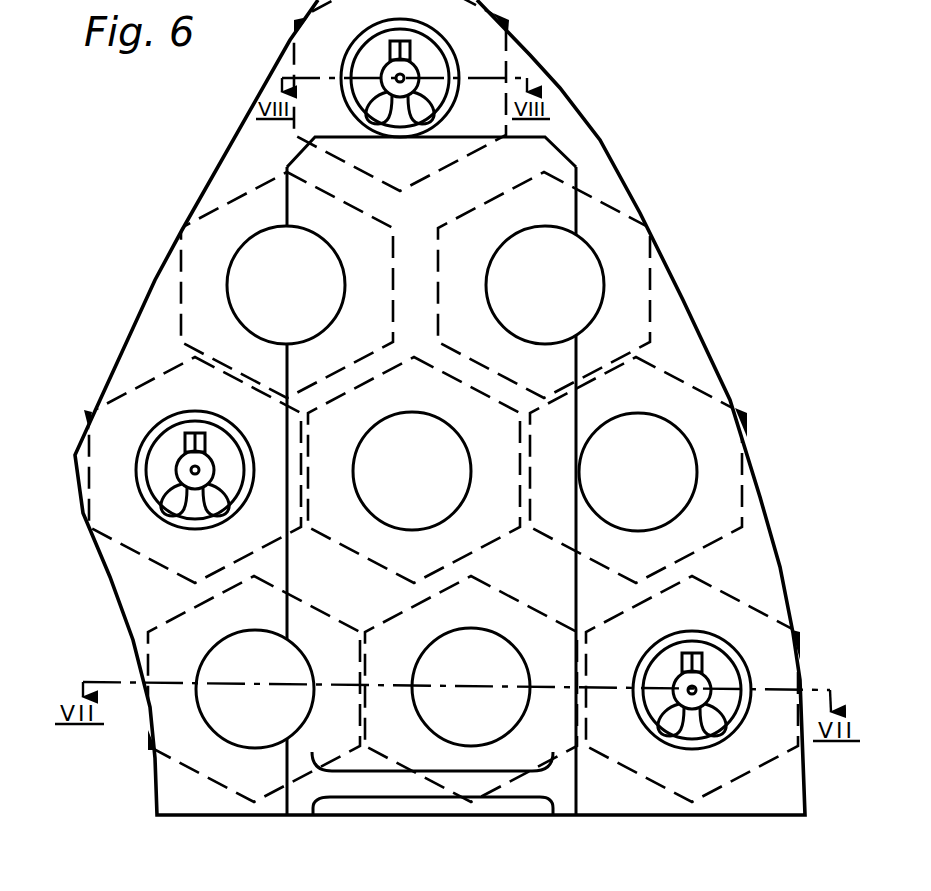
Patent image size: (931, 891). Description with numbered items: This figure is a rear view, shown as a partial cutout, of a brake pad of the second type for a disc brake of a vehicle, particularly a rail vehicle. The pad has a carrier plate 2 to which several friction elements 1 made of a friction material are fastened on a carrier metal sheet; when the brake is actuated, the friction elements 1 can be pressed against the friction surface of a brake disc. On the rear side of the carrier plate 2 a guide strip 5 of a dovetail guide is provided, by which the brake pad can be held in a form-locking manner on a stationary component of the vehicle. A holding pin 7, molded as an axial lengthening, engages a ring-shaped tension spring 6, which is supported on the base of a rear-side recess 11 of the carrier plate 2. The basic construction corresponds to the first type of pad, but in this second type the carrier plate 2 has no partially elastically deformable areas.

The friction element 1 is at (683, 380).
The carrier plate 2 is at (758, 507).
The guide strip 5 is at (558, 368).
The tension spring 6 is at (745, 708).
The holding pin 7 is at (700, 693).
The rear-side recess 11 is at (667, 703).